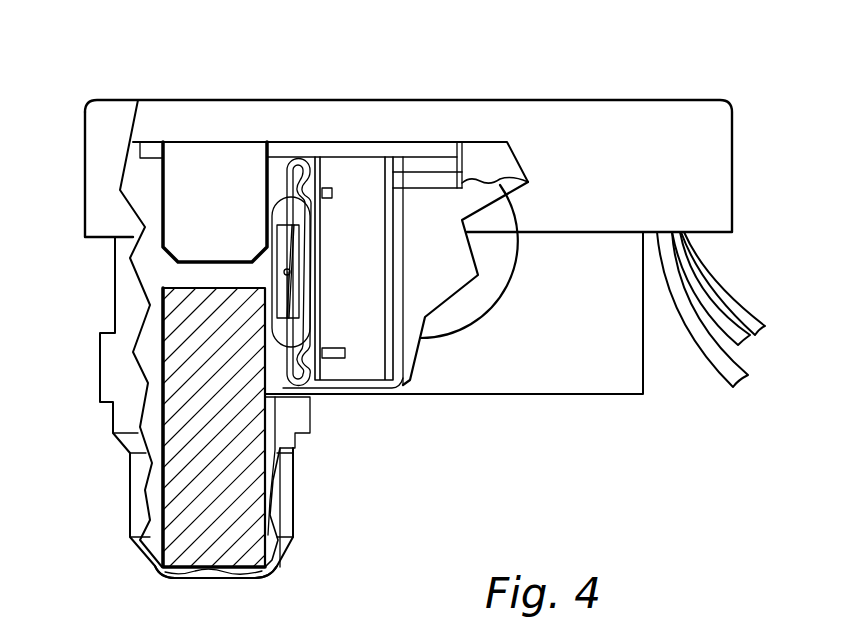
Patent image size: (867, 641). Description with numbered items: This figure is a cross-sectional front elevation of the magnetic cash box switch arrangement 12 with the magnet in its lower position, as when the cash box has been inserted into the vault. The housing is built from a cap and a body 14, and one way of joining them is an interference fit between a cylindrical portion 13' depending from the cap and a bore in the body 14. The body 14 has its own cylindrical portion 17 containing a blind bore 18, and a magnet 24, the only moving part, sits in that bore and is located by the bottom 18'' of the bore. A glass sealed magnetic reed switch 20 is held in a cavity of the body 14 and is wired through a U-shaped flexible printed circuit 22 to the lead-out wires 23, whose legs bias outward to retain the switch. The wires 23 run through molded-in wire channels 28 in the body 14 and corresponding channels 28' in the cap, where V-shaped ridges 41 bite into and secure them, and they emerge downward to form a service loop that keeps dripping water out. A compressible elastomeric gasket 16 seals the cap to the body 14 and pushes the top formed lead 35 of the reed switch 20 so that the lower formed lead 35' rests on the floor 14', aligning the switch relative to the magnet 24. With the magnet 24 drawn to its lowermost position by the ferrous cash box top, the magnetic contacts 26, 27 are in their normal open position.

The magnetic cash box switch arrangement 12 is at (757, 187).
The cylindrical portion 13' is at (215, 202).
The body 14 is at (490, 347).
The floor 14' is at (329, 482).
The elastomeric gasket 16 is at (403, 147).
The cylindrical portion 17 is at (130, 518).
The blind bore 18 is at (96, 333).
The bottom of the blind bore 18'' is at (177, 602).
The magnetic reed switch 20 is at (280, 347).
The flexible printed circuit 22 is at (370, 287).
The lead-out wires 23 is at (457, 182).
The magnet 24 is at (228, 558).
The magnetic contact 26 is at (285, 248).
The magnetic contact 27 is at (290, 303).
The wire channels 28 is at (427, 225).
The channels 28' is at (542, 113).
The top formed lead 35 is at (317, 196).
The lower formed lead 35' is at (350, 418).
The V-shaped ridges 41 is at (483, 170).